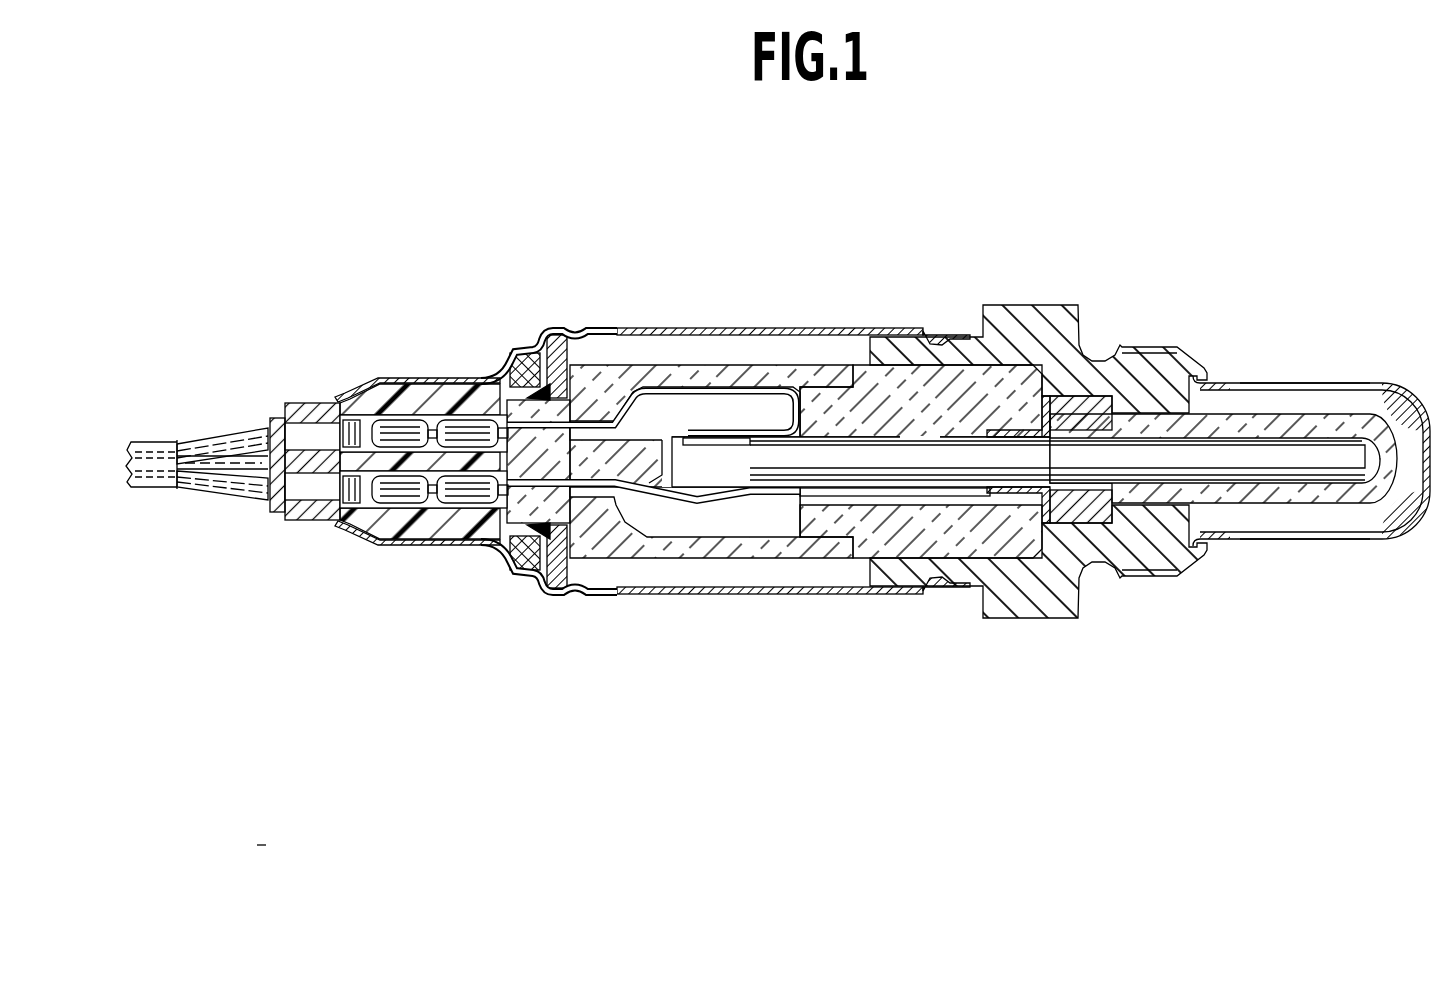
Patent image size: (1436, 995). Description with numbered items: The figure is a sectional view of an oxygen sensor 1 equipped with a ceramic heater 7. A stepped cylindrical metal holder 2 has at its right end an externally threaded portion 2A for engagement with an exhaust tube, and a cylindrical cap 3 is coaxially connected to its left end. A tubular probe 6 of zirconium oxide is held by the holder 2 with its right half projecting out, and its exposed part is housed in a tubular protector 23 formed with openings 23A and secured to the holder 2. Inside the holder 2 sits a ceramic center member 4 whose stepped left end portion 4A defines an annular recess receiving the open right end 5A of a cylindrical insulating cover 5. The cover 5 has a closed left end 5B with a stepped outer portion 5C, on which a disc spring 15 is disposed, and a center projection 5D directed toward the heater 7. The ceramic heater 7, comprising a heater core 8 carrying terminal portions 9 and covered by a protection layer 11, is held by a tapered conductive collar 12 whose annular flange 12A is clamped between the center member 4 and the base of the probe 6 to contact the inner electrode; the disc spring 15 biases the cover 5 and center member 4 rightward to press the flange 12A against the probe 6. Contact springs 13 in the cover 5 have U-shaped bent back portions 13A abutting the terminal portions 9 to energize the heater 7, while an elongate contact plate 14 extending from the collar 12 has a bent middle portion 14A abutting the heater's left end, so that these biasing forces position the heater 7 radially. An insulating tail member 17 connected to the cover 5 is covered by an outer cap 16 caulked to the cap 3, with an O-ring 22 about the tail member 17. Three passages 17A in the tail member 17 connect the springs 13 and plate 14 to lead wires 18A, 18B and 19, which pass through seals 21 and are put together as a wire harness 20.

The oxygen sensor 1 is at (777, 413).
The holder 2 is at (1081, 322).
The externally threaded portion 2A is at (1162, 575).
The cylindrical cap 3 is at (668, 596).
The center member 4 is at (990, 378).
The stepped left end portion 4A is at (838, 525).
The insulating cover 5 is at (706, 372).
The open right end 5A is at (882, 372).
The closed left end 5B is at (510, 400).
The stepped outer portion 5C is at (528, 572).
The center projection 5D is at (660, 378).
The tubular probe 6 is at (1247, 415).
The ceramic heater 7 is at (915, 426).
The heater core 8 is at (740, 475).
The terminal portion 9 is at (712, 480).
The protection layer 11 is at (1247, 478).
The conductive collar 12 is at (1013, 497).
The annular flange 12A is at (1087, 523).
The contact spring 13 is at (605, 378).
The U-shaped bent back portion 13A is at (742, 390).
The contact plate 14 is at (927, 496).
The bent middle portion 14A is at (752, 500).
The disc spring 15 is at (565, 575).
The outer cap 16 is at (437, 380).
The tail member 17 is at (362, 400).
The passage 17A is at (408, 418).
The lead wire 18A is at (226, 432).
The lead wire 18B is at (213, 478).
The lead wire 19 is at (250, 500).
The wire harness 20 is at (143, 446).
The seal 21 is at (277, 416).
The O-ring 22 is at (508, 568).
The tubular protector 23 is at (1430, 500).
The opening 23A is at (1330, 383).